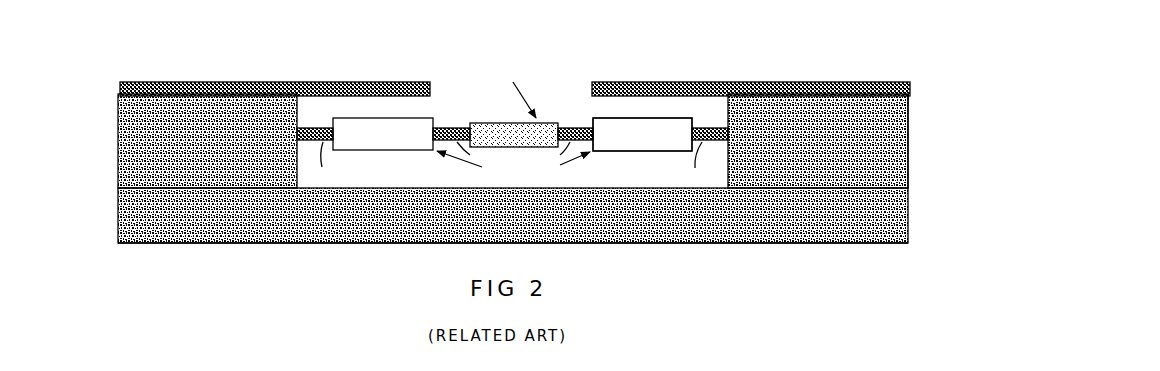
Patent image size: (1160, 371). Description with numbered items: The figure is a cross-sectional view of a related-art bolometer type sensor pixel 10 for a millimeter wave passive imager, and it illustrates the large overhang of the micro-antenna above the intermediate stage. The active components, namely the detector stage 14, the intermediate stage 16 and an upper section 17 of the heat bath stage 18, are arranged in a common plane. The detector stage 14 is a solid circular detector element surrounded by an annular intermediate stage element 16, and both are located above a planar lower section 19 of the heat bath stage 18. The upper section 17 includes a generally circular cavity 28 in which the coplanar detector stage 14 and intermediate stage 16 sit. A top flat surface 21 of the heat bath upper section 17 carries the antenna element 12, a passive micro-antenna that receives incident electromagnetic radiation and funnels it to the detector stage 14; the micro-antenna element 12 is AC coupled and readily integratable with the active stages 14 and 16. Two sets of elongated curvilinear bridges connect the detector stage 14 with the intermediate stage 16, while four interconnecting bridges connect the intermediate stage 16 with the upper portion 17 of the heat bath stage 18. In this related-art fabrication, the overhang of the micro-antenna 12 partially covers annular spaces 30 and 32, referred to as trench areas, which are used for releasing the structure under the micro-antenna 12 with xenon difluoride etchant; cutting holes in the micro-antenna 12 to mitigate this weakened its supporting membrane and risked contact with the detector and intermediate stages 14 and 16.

The bolometer type sensor pixel 10 is at (714, 42).
The micro-antenna element 12 is at (412, 82).
The detector stage 14 is at (503, 122).
The intermediate stage 16 is at (380, 137).
The upper section of the heat bath stage 17 is at (908, 122).
The heat bath stage 18 is at (922, 167).
The planar lower section of the heat bath stage 19 is at (908, 212).
The top flat surface 21 is at (910, 97).
The circular cavity 28 is at (640, 107).
The annular space (trench area) 30 is at (313, 123).
The annular space (trench area) 32 is at (443, 126).